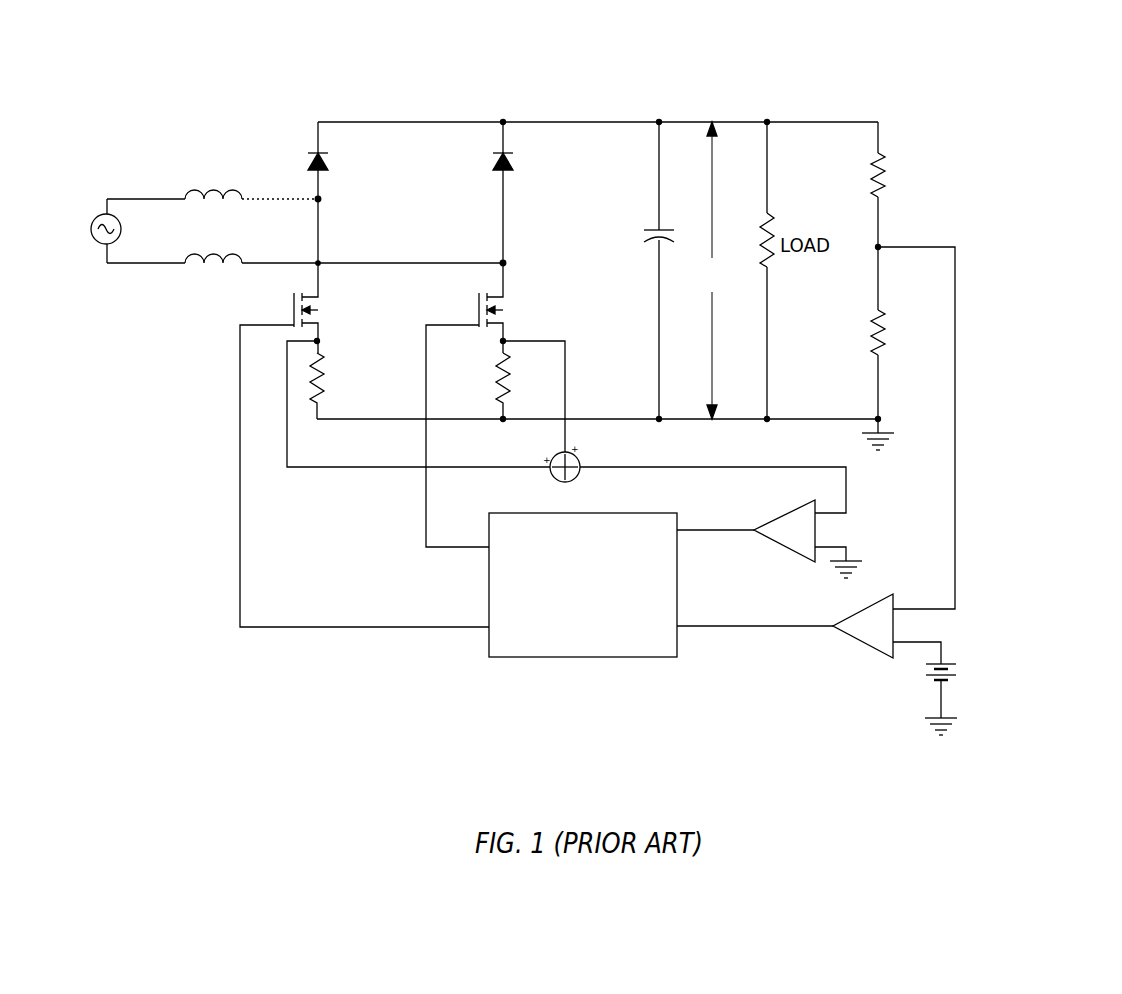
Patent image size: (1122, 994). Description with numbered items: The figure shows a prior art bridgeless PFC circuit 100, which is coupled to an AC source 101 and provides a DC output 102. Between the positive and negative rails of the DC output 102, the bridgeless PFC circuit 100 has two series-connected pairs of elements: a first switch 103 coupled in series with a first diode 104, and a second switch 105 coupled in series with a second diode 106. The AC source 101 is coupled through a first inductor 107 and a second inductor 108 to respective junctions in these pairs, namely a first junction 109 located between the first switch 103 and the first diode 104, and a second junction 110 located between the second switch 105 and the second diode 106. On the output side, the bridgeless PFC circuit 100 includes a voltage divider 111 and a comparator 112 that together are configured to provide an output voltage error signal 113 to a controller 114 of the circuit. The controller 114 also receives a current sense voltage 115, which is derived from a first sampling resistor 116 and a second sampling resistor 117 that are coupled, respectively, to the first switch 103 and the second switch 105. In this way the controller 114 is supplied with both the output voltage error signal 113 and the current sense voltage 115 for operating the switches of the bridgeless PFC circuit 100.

The bridgeless PFC circuit 100 is at (562, 43).
The AC source 101 is at (125, 240).
The DC output 102 is at (713, 270).
The first switch 103 is at (313, 310).
The first diode 104 is at (307, 160).
The second switch 105 is at (498, 311).
The second diode 106 is at (492, 160).
The first inductor 107 is at (212, 188).
The second inductor 108 is at (204, 268).
The first junction 109 is at (321, 197).
The second junction 110 is at (505, 262).
The voltage divider 111 is at (917, 137).
The comparator 112 is at (851, 636).
The output voltage error signal 113 is at (735, 626).
The controller 114 is at (607, 514).
The current sense voltage 115 is at (703, 530).
The first sampling resistor 116 is at (321, 388).
The second sampling resistor 117 is at (504, 384).